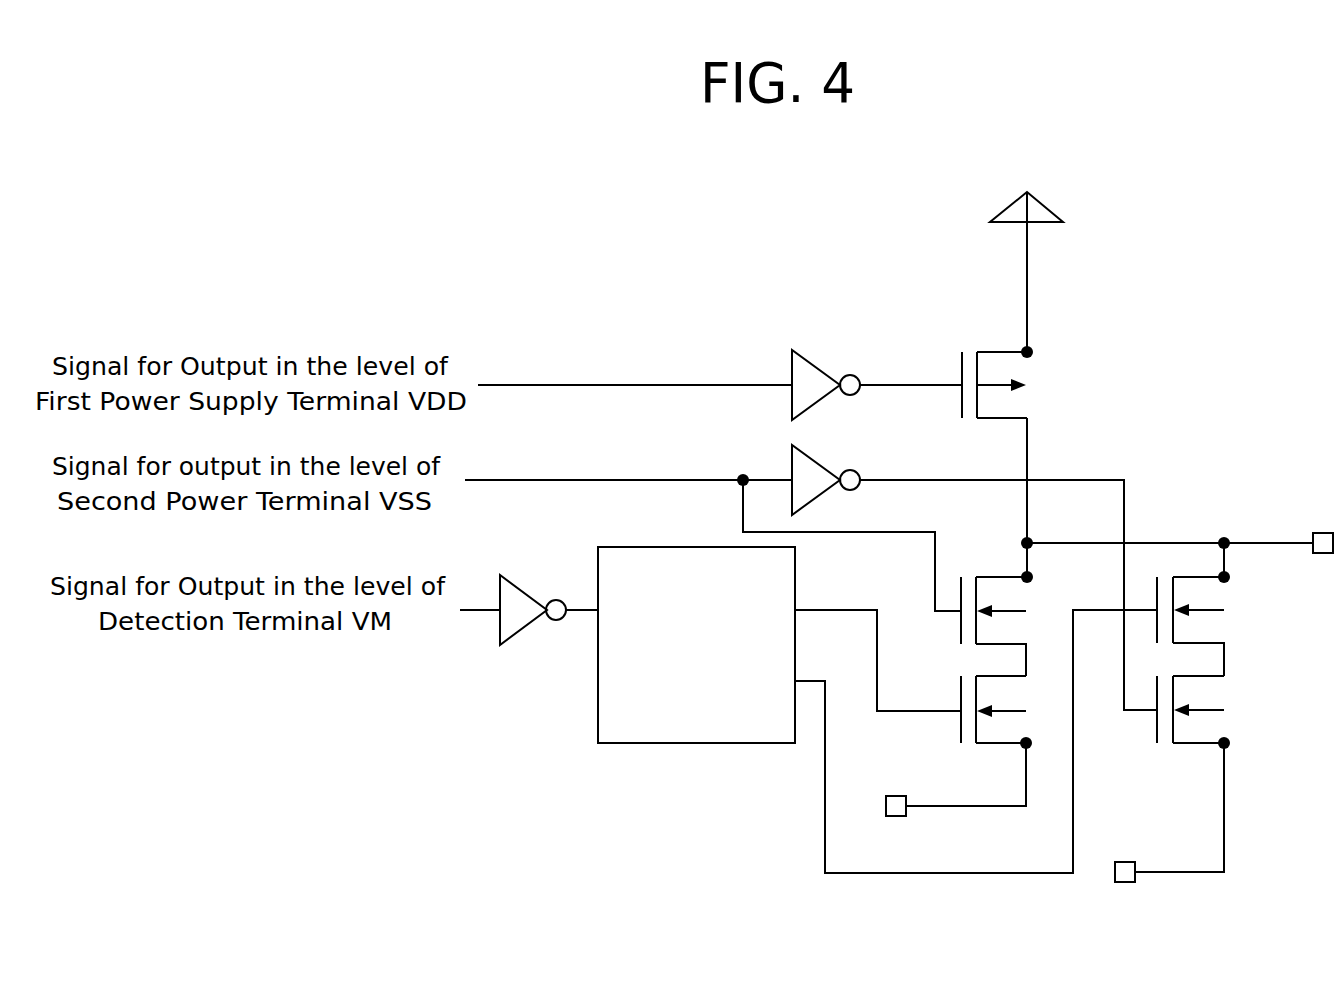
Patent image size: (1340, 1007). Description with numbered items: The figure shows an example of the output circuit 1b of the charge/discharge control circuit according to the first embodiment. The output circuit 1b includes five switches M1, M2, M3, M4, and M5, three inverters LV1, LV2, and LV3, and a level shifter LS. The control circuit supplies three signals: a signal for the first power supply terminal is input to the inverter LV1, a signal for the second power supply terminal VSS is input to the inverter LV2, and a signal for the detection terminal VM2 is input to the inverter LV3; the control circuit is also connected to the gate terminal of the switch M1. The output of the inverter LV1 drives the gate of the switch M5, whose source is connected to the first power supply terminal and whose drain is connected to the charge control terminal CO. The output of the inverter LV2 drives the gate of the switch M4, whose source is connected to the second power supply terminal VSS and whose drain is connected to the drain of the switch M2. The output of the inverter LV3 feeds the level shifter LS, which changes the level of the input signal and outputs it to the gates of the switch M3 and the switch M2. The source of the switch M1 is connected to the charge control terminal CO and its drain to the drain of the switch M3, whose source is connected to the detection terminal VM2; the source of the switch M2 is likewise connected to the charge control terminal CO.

The output circuit 1b is at (662, 296).
The inverter LV1 is at (820, 366).
The inverter LV2 is at (792, 464).
The inverter LV3 is at (520, 635).
The level shifter LS is at (698, 744).
The switch M1 is at (996, 576).
The switch M2 is at (1226, 594).
The switch M3 is at (1000, 746).
The switch M4 is at (1226, 722).
The switch M5 is at (1000, 350).
The charge control terminal CO is at (1323, 531).
The detection terminal VM2 is at (894, 823).
The second power supply terminal VSS is at (1125, 891).